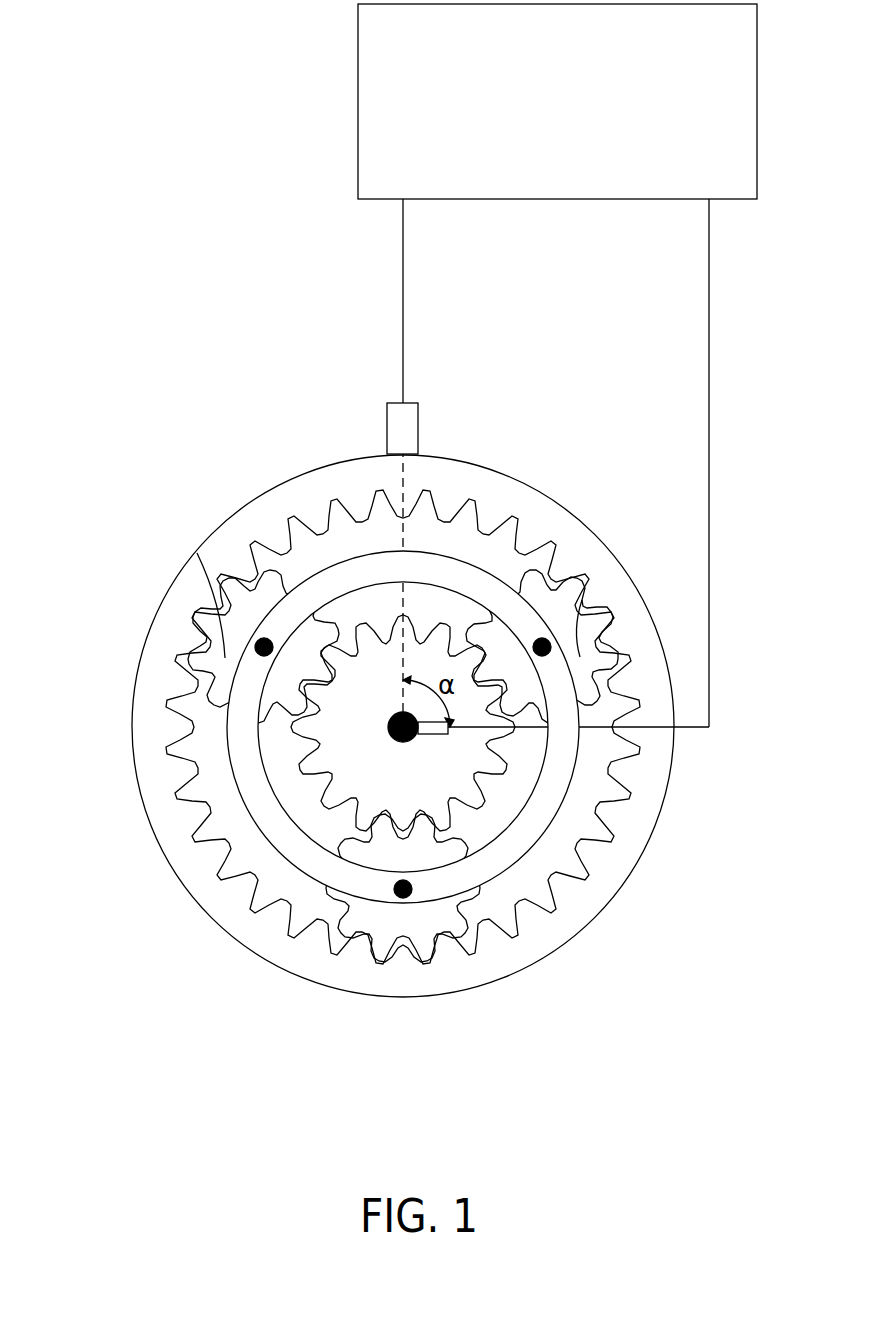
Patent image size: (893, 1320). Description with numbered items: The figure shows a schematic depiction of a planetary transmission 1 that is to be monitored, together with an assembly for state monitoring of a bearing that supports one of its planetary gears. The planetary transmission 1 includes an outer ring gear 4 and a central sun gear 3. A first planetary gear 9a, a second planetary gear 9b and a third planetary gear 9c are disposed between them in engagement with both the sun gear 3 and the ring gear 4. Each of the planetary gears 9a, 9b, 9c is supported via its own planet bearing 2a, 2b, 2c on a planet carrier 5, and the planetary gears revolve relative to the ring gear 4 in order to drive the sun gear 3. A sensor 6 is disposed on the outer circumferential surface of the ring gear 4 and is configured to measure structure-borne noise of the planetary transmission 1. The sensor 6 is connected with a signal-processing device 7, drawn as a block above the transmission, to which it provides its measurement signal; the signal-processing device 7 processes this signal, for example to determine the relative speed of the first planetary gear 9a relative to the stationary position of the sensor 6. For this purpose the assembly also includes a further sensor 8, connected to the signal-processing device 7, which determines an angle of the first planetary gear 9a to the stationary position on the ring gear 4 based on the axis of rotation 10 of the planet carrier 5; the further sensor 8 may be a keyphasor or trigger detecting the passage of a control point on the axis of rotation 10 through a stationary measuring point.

The planetary transmission 1 is at (635, 907).
The bearing 2a is at (603, 635).
The bearing 2b is at (385, 920).
The bearing 2c is at (203, 635).
The sun gear 3 is at (350, 743).
The ring gear 4 is at (163, 823).
The planet carrier 5 is at (293, 848).
The sensor 6 is at (418, 430).
The signal-processing device 7 is at (757, 102).
The further sensor 8 is at (433, 737).
The first planetary gear 9a is at (542, 647).
The second planetary gear 9b is at (403, 890).
The third planetary gear 9c is at (264, 647).
The axis of rotation 10 is at (395, 712).